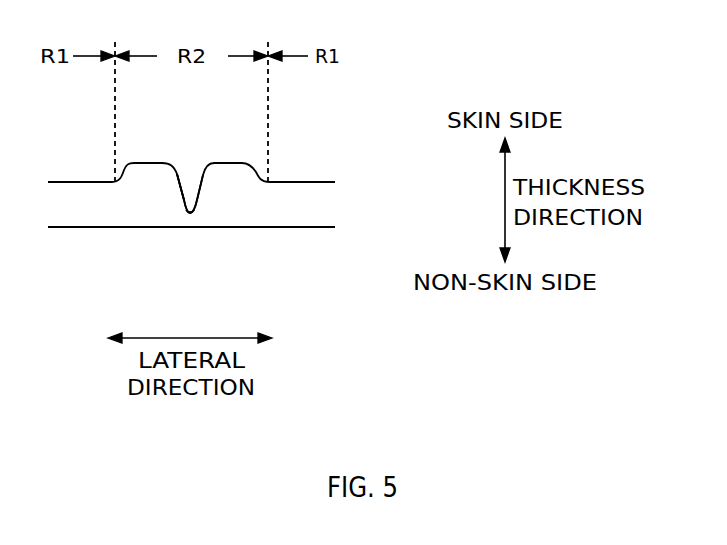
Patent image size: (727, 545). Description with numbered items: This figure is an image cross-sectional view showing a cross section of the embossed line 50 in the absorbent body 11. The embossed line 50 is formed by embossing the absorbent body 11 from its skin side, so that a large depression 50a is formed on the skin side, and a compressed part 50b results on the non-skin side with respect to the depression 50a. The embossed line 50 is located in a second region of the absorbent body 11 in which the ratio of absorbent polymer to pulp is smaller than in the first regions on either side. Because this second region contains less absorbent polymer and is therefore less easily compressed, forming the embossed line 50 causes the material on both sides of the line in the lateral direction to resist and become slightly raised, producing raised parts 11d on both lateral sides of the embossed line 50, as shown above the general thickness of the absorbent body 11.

The absorbent body 11 is at (300, 192).
The raised parts 11d is at (155, 175).
The embossed line 50 is at (191, 172).
The depression 50a is at (195, 193).
The compressed part 50b is at (190, 213).